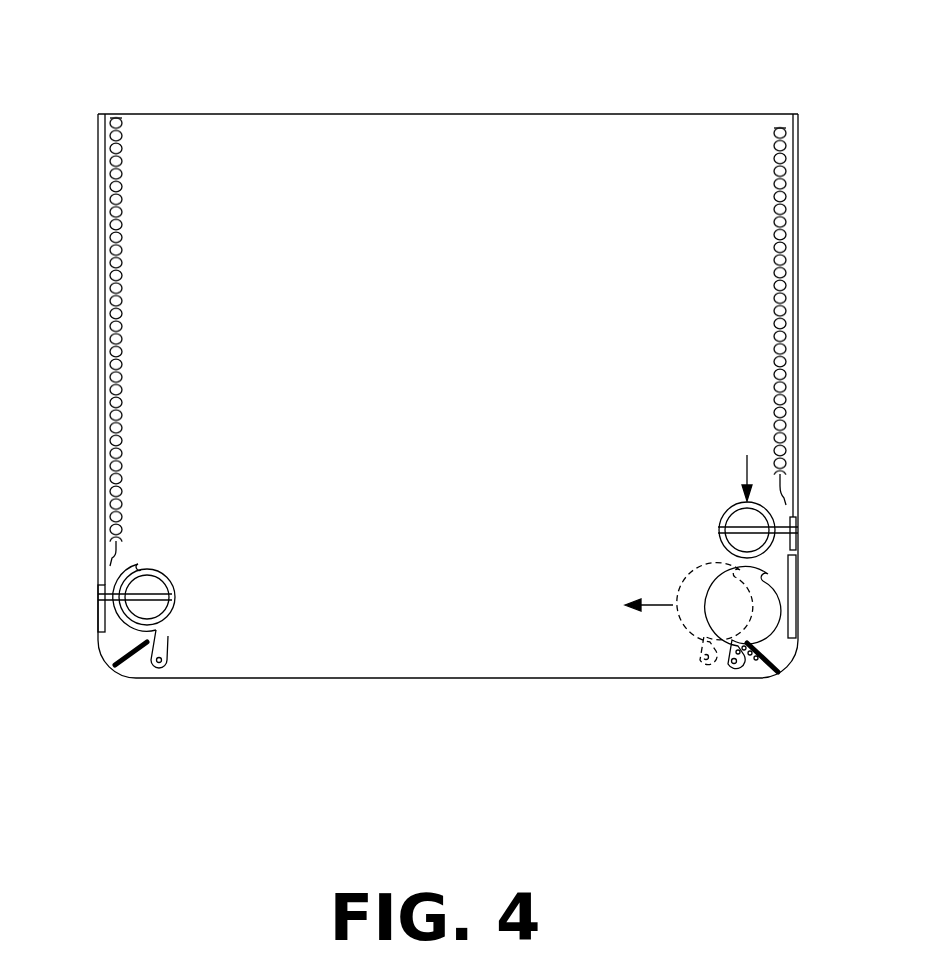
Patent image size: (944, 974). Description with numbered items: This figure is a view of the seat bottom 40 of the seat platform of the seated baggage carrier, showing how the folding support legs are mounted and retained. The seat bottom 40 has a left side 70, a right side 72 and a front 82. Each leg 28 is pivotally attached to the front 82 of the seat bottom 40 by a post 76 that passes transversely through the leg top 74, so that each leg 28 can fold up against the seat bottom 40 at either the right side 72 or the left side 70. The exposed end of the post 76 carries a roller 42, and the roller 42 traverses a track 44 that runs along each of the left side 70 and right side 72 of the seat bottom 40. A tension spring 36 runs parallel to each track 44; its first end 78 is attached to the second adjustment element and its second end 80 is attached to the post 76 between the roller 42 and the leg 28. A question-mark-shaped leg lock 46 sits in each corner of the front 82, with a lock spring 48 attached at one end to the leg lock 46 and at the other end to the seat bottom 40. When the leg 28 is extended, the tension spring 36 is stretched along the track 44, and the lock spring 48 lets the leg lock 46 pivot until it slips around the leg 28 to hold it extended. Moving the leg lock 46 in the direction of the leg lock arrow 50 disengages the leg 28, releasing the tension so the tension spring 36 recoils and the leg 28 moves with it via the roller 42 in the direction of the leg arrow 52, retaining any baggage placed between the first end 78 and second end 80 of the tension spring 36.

The support legs 28 is at (135, 595).
The tension spring 36 is at (123, 243).
The seat bottom 40 is at (462, 140).
The roller 42 is at (98, 588).
The track 44 is at (98, 424).
The leg lock 46 is at (468, 398).
The lock spring 48 is at (132, 655).
The leg lock arrow 50 is at (657, 607).
The leg arrow 52 is at (747, 462).
The left side 70 is at (98, 290).
The right side 72 is at (798, 318).
The leg top 74 is at (178, 583).
The post 76 is at (133, 590).
The first end 78 is at (115, 120).
The second end 80 is at (98, 582).
The front 82 is at (413, 680).